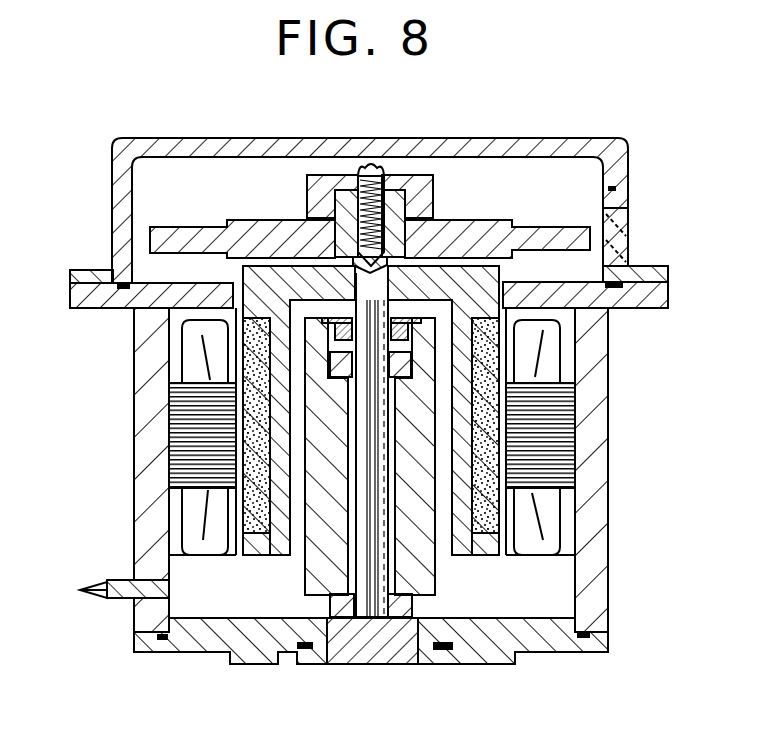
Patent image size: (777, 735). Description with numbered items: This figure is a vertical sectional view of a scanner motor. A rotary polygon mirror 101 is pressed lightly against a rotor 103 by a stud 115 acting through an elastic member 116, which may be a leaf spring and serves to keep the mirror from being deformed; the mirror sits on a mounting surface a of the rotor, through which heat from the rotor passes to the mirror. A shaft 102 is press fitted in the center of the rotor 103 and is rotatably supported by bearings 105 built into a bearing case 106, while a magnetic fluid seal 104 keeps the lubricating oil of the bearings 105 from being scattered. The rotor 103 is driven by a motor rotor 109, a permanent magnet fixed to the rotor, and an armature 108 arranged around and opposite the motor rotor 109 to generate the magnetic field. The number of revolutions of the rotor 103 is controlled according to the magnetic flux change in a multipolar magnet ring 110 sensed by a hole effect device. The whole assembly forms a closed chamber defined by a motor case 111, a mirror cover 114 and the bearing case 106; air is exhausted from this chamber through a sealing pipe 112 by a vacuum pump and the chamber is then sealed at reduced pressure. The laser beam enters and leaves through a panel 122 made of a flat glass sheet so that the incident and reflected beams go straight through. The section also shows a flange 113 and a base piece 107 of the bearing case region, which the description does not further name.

The rotary polygon mirror 101 is at (563, 220).
The shaft 102 is at (403, 285).
The rotor 103 is at (499, 310).
The magnetic fluid seal 104 is at (324, 324).
The bearings 105 is at (333, 363).
The bearing case 106 is at (215, 642).
The bottom bearing block 107 is at (365, 652).
The armature 108 is at (563, 432).
The motor rotor 109 is at (490, 497).
The multipolar magnet ring 110 is at (487, 560).
The motor case 111 is at (608, 367).
The sealing pipe 112 is at (118, 580).
The flange 113 is at (114, 268).
The mirror cover 114 is at (113, 195).
The stud 115 is at (422, 172).
The elastic member 116 is at (300, 210).
The panel 122 is at (628, 228).
The mounting surface a is at (277, 260).